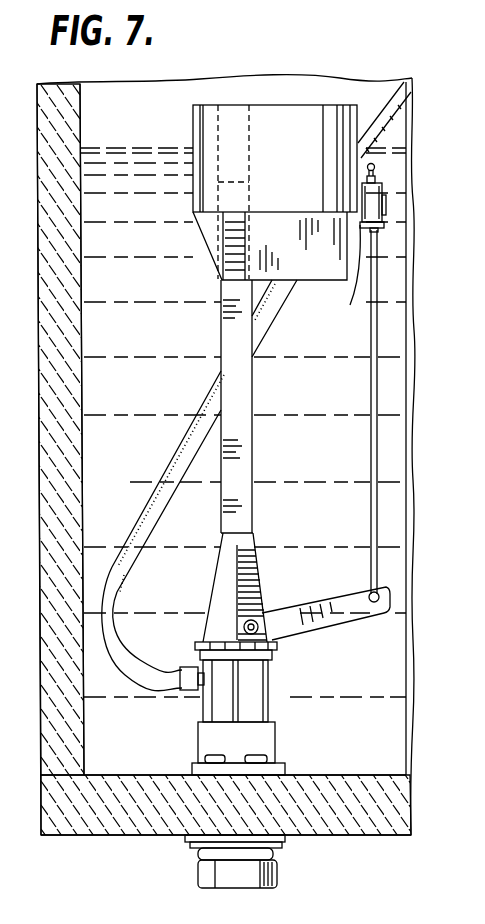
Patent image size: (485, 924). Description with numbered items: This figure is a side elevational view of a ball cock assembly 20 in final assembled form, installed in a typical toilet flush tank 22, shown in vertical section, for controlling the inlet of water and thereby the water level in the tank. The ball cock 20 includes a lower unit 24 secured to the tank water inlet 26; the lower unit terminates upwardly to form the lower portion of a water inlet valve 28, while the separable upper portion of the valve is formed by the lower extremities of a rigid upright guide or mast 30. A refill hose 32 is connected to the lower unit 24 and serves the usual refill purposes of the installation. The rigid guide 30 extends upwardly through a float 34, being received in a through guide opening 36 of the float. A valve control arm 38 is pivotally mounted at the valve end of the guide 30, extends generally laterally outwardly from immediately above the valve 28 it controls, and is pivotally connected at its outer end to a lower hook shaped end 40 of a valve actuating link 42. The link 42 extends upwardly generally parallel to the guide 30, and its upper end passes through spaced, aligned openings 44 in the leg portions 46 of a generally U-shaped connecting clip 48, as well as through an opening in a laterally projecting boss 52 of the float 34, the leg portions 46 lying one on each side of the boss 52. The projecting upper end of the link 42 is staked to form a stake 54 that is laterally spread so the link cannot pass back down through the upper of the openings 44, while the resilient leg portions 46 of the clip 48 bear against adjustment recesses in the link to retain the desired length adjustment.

The ball cock assembly 20 is at (160, 375).
The toilet flush tank 22 is at (45, 543).
The lower unit 24 is at (250, 740).
The tank water inlet 26 is at (200, 880).
The water inlet valve 28 is at (288, 662).
The rigid upright guide or mast 30 is at (253, 445).
The refill hose 32 is at (195, 427).
The float 34 is at (200, 136).
The guide opening 36 is at (255, 118).
The valve control arm 38 is at (338, 615).
The lower hook shaped end 40 is at (362, 600).
The valve actuating link 42 is at (370, 507).
The openings 44 is at (378, 224).
The leg portions 46 is at (384, 220).
The connecting clip 48 is at (405, 215).
The boss 52 is at (352, 302).
The stake 54 is at (378, 174).